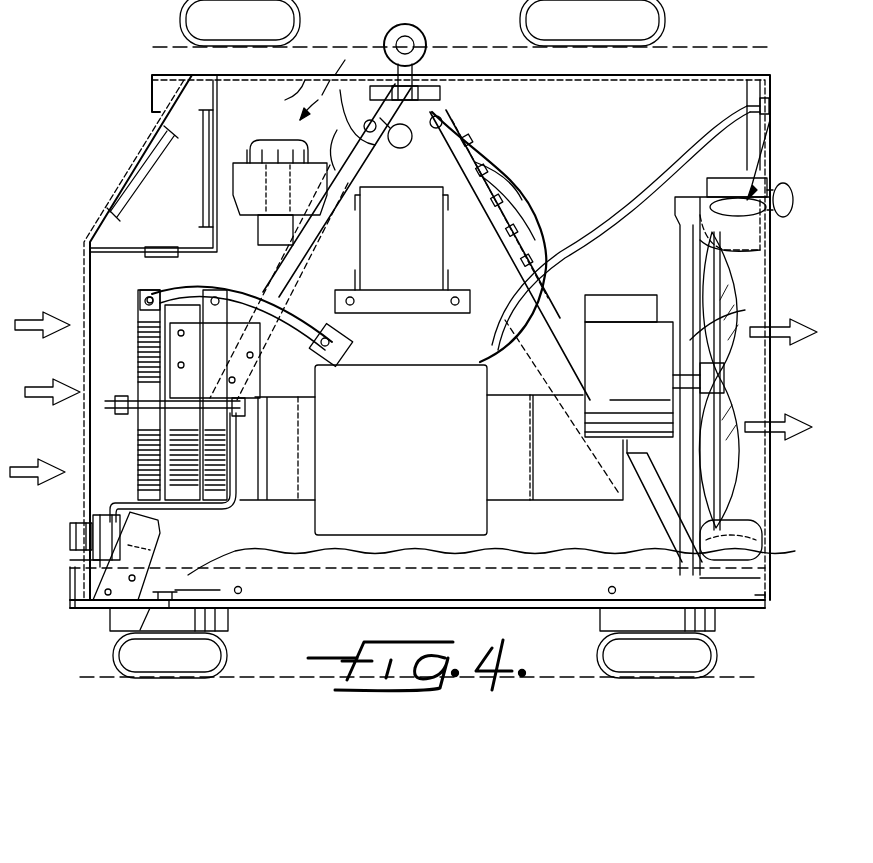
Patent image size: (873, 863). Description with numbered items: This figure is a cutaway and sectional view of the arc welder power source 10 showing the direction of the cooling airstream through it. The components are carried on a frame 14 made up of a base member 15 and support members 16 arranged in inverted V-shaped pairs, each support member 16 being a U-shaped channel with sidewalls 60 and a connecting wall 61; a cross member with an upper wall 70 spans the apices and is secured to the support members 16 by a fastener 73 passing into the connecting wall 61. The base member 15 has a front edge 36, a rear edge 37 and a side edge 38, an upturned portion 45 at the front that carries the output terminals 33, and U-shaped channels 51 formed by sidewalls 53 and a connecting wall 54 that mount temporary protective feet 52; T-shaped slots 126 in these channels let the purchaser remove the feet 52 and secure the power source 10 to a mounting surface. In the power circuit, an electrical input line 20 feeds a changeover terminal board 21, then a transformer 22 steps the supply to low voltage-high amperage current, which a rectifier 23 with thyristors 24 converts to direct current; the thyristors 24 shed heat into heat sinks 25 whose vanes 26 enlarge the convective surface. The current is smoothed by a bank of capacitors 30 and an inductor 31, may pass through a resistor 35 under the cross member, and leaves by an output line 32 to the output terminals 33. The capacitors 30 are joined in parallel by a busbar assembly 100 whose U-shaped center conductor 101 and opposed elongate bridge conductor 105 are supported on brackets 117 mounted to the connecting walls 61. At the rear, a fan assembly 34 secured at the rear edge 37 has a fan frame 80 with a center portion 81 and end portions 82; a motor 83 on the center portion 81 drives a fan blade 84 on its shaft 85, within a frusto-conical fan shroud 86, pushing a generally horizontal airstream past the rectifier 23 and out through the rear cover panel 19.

The arc welder power source 10 is at (788, 64).
The frame 14 is at (120, 612).
The base member 15 is at (628, 562).
The support members 16 is at (525, 325).
The rear cover panel 19 is at (770, 120).
The electrical input line 20 is at (660, 172).
The changeover terminal board 21 is at (478, 162).
The transformer 22 is at (330, 500).
The rectifier 23 is at (140, 480).
The thyristors 24 is at (205, 412).
The heat sinks 25 is at (205, 470).
The vanes 26 is at (140, 330).
The bank of capacitors 30 is at (225, 245).
The inductor 31 is at (415, 275).
The output line 32 is at (90, 578).
The output terminals 33 is at (70, 532).
The fan assembly 34 is at (775, 160).
The resistor 35 is at (412, 135).
The front edge 36 is at (72, 605).
The rear edge 37 is at (765, 592).
The side edge 38 is at (548, 608).
The upturned portion 45 is at (93, 550).
The U-shaped channels 51 is at (770, 575).
The protective feet 52 is at (280, 22).
The sidewalls 53 is at (185, 582).
The connecting wall 54 is at (157, 607).
The sidewalls 60 is at (337, 128).
The connecting wall 61 is at (246, 325).
The upper wall 70 is at (420, 60).
The fastener 73 is at (364, 120).
The fan frame 80 is at (688, 215).
The center portion 81 is at (745, 310).
The end portions 82 is at (793, 200).
The motor 83 is at (620, 340).
The fan blade 84 is at (735, 280).
The shaft 85 is at (725, 365).
The fan shroud 86 is at (758, 252).
The busbar assembly 100 is at (334, 75).
The center conductor 101 is at (279, 270).
The elongate bridge conductor 105 is at (310, 78).
The brackets 117 is at (215, 200).
The T-shaped slots 126 is at (137, 535).